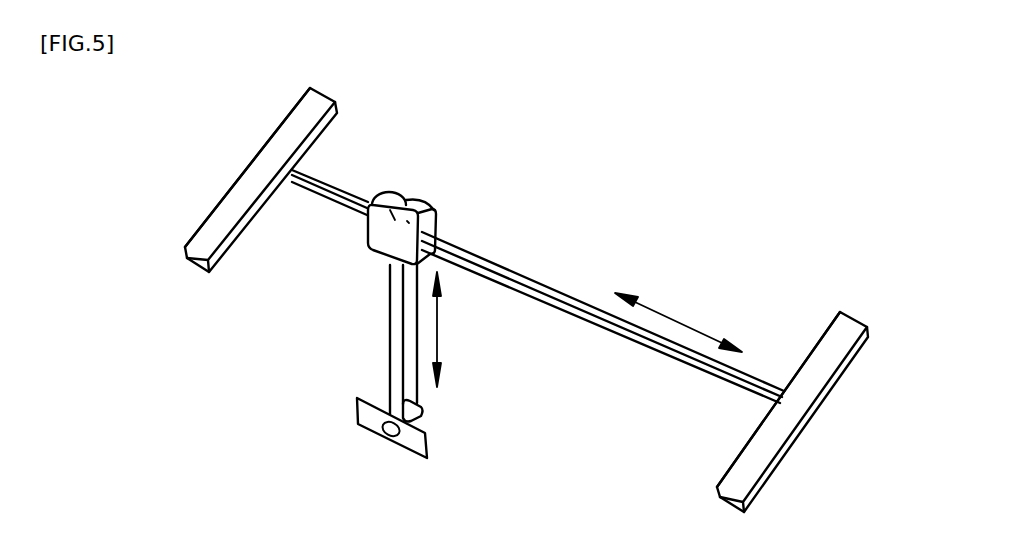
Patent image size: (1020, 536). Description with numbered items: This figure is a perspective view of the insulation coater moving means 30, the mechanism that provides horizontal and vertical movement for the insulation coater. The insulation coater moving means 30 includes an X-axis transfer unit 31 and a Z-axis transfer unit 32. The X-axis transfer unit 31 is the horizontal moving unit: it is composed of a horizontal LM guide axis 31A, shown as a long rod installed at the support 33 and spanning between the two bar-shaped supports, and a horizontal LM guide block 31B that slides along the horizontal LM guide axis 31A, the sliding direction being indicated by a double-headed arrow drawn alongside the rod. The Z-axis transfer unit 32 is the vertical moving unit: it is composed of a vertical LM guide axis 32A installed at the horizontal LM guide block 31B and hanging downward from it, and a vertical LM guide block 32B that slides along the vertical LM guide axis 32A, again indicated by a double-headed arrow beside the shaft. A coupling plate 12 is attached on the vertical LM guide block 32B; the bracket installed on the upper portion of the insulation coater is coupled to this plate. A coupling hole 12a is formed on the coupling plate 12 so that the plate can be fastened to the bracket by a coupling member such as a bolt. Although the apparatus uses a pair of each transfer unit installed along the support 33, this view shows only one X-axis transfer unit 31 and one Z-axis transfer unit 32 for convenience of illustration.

The insulation coater moving means 30 is at (692, 154).
The X-axis transfer unit 31 is at (472, 142).
The horizontal LM guide axis 31A is at (548, 286).
The horizontal LM guide block 31B is at (393, 212).
The Z-axis transfer unit 32 is at (280, 292).
The vertical LM guide axis 32A is at (389, 298).
The vertical LM guide block 32B is at (389, 397).
The support 33 is at (263, 170).
The coupling plate 12 is at (357, 418).
The coupling hole 12a is at (383, 437).